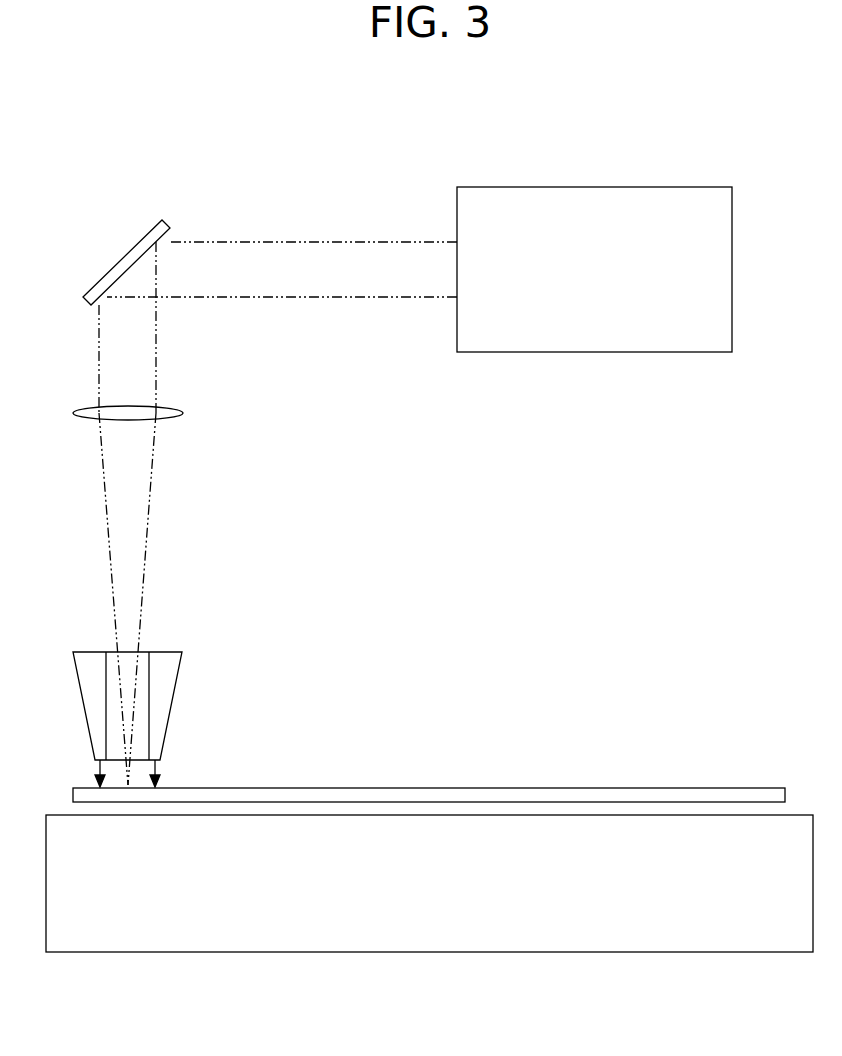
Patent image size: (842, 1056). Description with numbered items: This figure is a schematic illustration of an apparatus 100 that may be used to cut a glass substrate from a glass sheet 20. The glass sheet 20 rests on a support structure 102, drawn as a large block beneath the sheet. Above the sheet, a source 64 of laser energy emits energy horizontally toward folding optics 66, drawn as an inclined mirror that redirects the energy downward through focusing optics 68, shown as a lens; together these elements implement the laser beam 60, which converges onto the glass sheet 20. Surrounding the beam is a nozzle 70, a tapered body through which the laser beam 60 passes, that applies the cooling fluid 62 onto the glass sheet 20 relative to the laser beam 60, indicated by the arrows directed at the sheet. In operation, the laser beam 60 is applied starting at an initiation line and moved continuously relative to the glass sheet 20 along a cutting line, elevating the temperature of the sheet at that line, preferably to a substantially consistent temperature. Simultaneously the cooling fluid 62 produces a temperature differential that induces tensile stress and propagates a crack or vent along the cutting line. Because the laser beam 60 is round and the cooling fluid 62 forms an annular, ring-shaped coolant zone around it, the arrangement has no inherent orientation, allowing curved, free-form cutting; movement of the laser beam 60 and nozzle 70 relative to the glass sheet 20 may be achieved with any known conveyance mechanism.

The apparatus 100 is at (408, 104).
The source of laser energy 64 is at (594, 269).
The folding optics 66 is at (142, 238).
The laser beam 60 is at (115, 612).
The focusing optics 68 is at (183, 412).
The nozzle 70 is at (168, 650).
The cooling fluid 62 is at (167, 775).
The glass sheet 20 is at (360, 788).
The support structure 102 is at (429, 883).